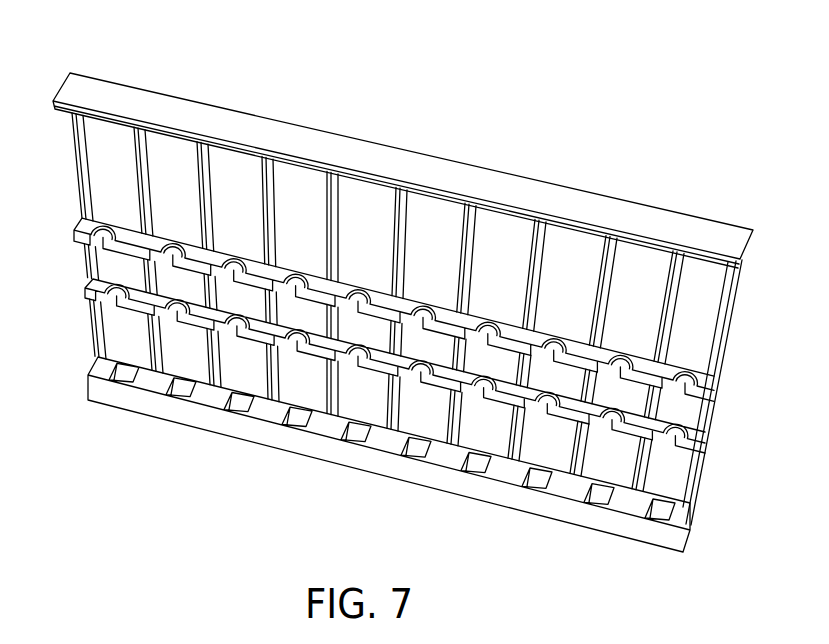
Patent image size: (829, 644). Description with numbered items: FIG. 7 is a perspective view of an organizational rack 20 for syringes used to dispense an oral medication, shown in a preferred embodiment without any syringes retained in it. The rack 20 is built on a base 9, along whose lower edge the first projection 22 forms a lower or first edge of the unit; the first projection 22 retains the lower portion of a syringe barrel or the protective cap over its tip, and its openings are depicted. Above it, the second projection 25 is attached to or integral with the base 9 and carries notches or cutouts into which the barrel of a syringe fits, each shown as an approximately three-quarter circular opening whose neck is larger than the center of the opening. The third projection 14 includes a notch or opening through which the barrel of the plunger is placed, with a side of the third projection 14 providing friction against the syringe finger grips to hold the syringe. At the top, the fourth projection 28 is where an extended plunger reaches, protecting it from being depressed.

The rack 20 is at (243, 88).
The fourth projection 28 is at (72, 88).
The base 9 is at (76, 163).
The third projection 14 is at (72, 236).
The second projection 25 is at (84, 289).
The first projection 22 is at (88, 380).